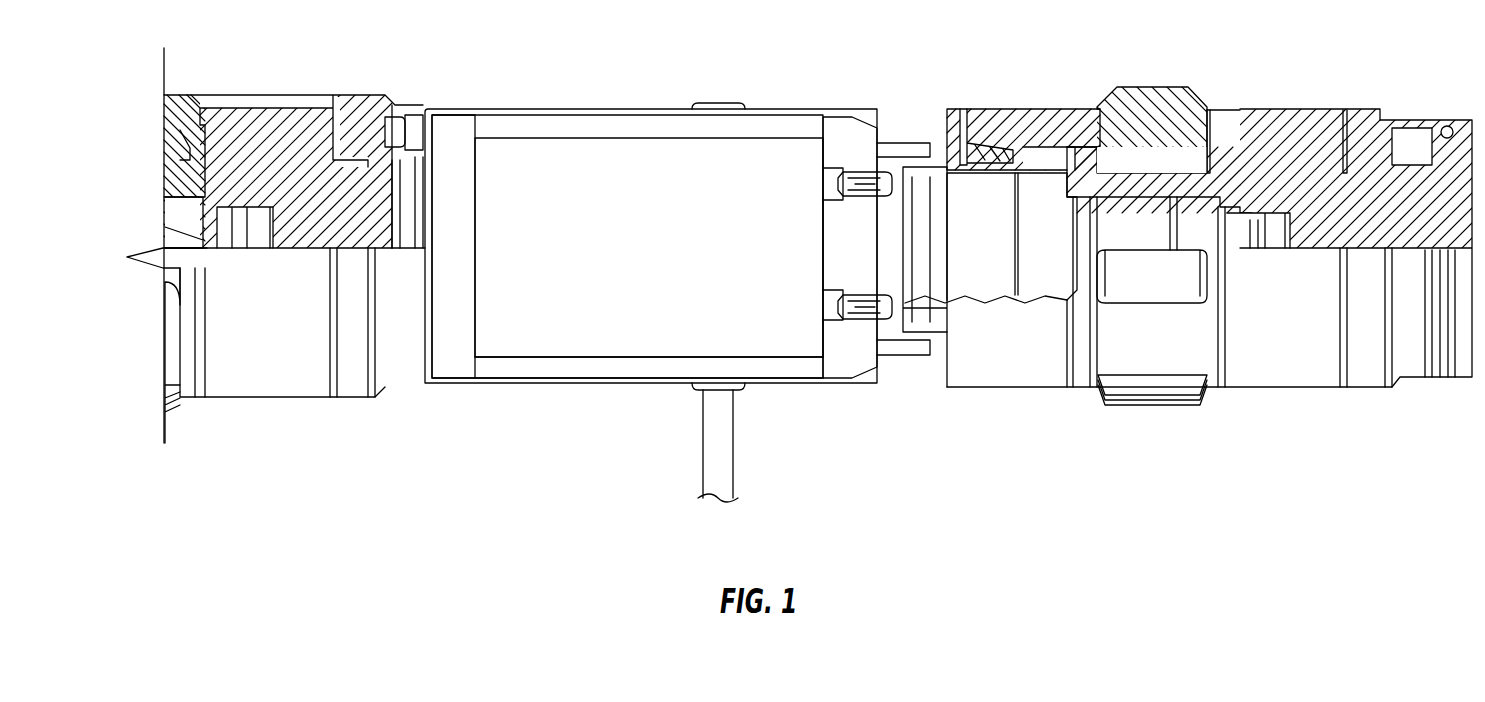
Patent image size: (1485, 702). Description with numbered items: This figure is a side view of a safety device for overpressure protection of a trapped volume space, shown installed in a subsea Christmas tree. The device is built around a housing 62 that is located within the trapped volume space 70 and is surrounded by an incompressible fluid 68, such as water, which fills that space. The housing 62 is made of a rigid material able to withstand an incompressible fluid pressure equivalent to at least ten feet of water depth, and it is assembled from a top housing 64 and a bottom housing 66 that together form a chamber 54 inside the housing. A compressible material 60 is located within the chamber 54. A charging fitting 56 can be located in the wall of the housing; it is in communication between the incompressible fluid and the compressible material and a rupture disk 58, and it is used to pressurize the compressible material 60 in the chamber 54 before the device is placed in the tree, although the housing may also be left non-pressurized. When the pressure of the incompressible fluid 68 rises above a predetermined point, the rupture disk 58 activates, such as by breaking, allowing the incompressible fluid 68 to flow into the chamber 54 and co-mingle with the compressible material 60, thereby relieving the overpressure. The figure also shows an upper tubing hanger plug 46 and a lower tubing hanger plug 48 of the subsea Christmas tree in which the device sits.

The upper tubing hanger plug 46 is at (280, 378).
The lower tubing hanger plug 48 is at (1278, 338).
The chamber 54 is at (603, 138).
The charging fitting 56 is at (880, 167).
The rupture disk 58 is at (878, 320).
The compressible material 60 is at (705, 168).
The housing 62 is at (500, 115).
The top housing 64 is at (450, 350).
The bottom housing 66 is at (858, 352).
The incompressible fluid 68 is at (892, 248).
The trapped volume space 70 is at (545, 378).